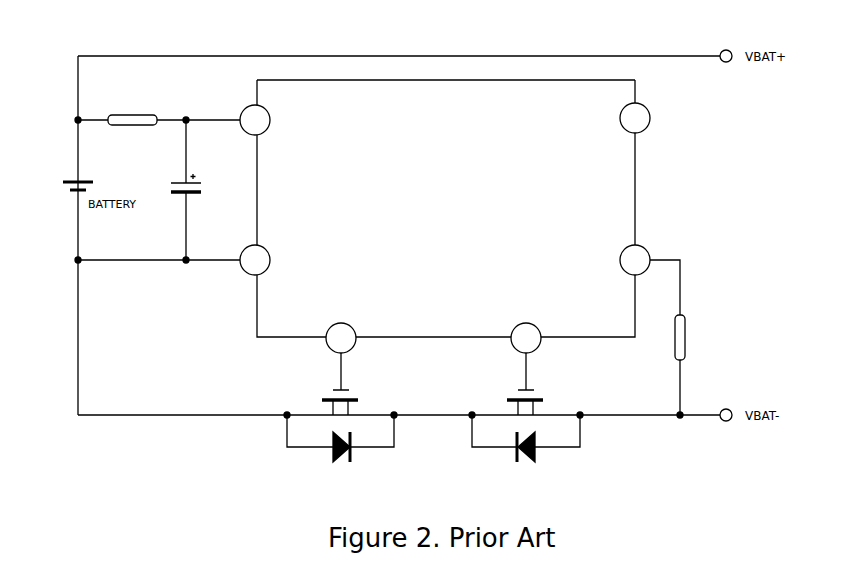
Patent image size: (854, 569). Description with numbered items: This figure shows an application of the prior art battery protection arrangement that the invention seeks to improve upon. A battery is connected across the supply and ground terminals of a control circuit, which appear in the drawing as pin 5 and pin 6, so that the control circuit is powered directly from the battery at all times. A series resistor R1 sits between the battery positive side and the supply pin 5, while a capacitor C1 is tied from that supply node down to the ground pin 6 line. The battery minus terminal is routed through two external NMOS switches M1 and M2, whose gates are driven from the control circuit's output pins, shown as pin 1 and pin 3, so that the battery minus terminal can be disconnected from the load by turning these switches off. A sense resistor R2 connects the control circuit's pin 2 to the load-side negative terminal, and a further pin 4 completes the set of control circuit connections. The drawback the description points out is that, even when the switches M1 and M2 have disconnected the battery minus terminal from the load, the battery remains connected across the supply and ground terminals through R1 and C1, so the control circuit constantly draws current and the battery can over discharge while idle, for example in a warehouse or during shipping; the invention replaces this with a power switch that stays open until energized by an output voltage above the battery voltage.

The OD pin (overdischarge output) 1 is at (341, 326).
The CSI pin (current sense input) 2 is at (618, 260).
The OC pin (overcharge output) 3 is at (526, 326).
The TD pin 4 is at (620, 118).
The VDD pin 5 is at (282, 120).
The Vss pin 6 is at (277, 260).
The resistor 100 ohm R1 is at (167, 118).
The capacitor 0.1uF C1 is at (207, 190).
The resistor 1K ohm R2 is at (681, 337).
The external NMOS switch M1 is at (340, 407).
The external NMOS switch M2 is at (526, 407).